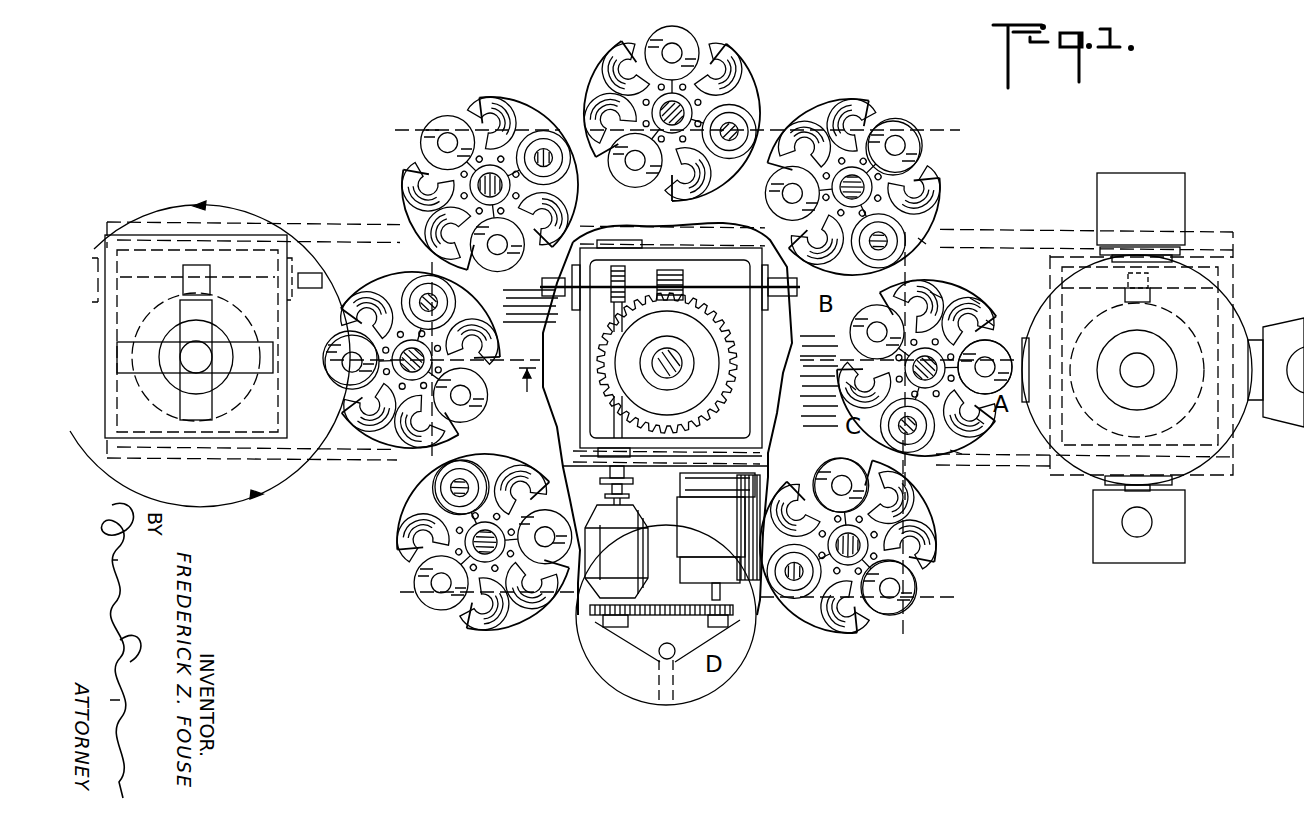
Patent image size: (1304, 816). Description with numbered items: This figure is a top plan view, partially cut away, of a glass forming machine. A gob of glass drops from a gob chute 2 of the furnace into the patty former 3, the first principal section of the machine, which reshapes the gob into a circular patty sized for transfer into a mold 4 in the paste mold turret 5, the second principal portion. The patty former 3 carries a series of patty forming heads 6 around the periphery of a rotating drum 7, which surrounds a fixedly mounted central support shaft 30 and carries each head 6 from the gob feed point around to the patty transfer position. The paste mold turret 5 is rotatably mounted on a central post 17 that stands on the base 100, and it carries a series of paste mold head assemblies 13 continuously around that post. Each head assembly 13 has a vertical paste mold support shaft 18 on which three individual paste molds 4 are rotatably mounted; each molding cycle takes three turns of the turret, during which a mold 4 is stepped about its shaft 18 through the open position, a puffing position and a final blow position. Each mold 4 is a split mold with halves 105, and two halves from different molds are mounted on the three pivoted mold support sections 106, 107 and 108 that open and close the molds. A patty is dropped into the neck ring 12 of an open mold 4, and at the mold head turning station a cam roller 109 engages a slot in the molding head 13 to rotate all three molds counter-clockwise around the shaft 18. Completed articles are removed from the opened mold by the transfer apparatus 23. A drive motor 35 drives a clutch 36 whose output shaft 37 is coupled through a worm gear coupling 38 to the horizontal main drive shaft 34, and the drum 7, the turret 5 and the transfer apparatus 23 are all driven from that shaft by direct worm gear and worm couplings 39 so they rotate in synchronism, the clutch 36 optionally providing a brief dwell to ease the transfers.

The gob chute 2 is at (527, 366).
The patty former 3 is at (1244, 320).
The paste mold 4 is at (922, 240).
The paste mold turret 5 is at (782, 113).
The patty forming head 6 is at (1160, 192).
The rotating drum 7 is at (1176, 481).
The neck ring 12 is at (345, 372).
The paste mold head assembly 13 is at (376, 440).
The central post 17 is at (666, 378).
The paste mold support shaft 18 is at (497, 462).
The transfer apparatus 23 is at (266, 218).
The central support shaft 30 is at (1145, 376).
The main drive shaft 34 is at (709, 292).
The drive motor 35 is at (718, 536).
The clutch 36 is at (616, 551).
The output shaft 37 is at (626, 498).
The worm gear coupling 38 is at (622, 279).
The worm gear and worm coupling 39 is at (684, 292).
The base 100 is at (1014, 238).
The mold halves 105 is at (975, 300).
The mold support section 106 is at (955, 452).
The mold support section 107 is at (936, 294).
The mold support section 108 is at (850, 385).
The cam roller 109 is at (676, 640).